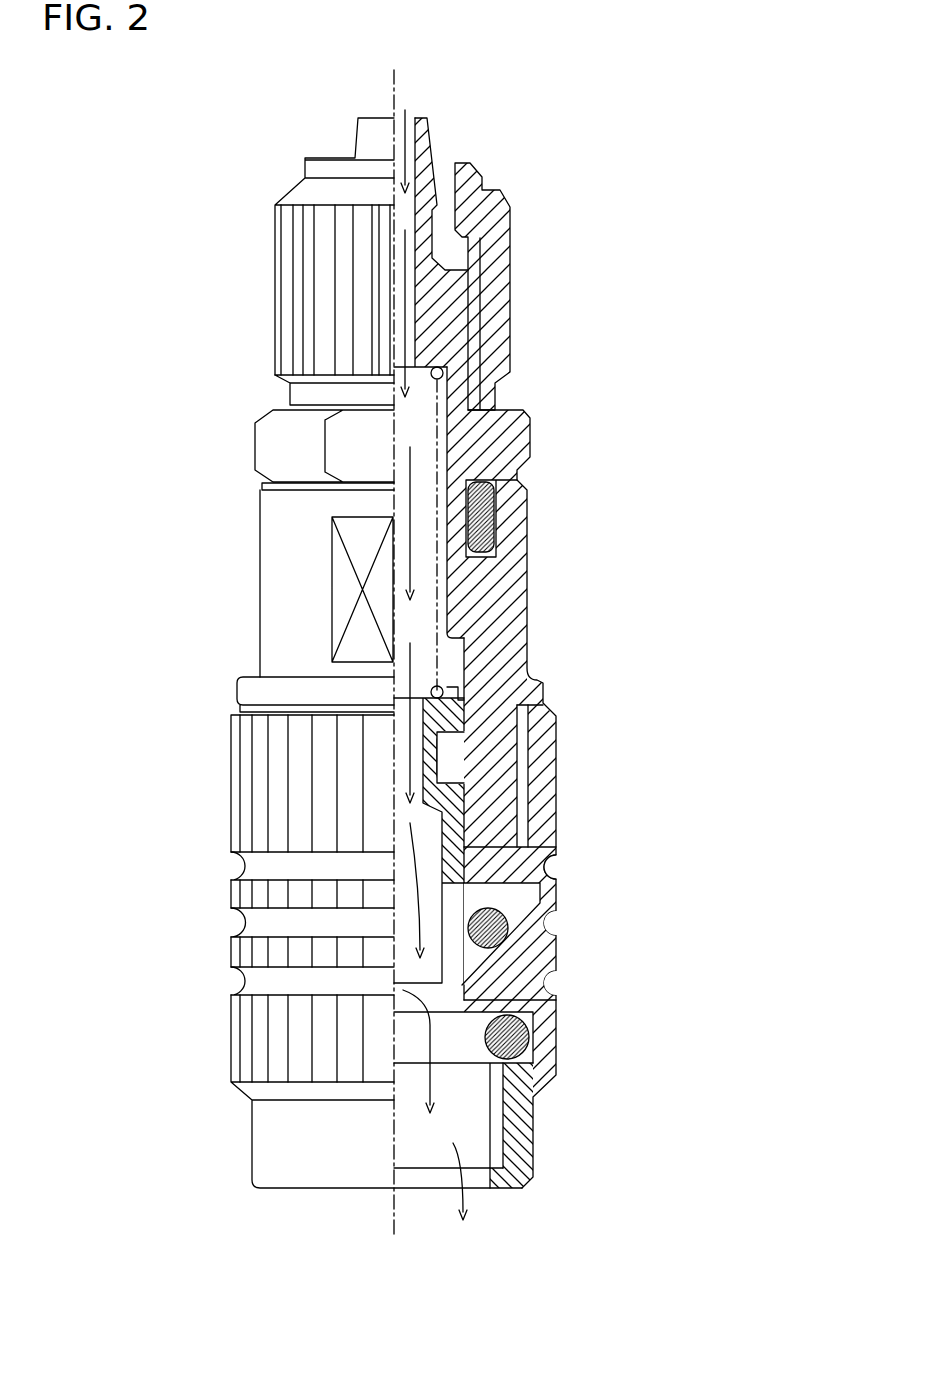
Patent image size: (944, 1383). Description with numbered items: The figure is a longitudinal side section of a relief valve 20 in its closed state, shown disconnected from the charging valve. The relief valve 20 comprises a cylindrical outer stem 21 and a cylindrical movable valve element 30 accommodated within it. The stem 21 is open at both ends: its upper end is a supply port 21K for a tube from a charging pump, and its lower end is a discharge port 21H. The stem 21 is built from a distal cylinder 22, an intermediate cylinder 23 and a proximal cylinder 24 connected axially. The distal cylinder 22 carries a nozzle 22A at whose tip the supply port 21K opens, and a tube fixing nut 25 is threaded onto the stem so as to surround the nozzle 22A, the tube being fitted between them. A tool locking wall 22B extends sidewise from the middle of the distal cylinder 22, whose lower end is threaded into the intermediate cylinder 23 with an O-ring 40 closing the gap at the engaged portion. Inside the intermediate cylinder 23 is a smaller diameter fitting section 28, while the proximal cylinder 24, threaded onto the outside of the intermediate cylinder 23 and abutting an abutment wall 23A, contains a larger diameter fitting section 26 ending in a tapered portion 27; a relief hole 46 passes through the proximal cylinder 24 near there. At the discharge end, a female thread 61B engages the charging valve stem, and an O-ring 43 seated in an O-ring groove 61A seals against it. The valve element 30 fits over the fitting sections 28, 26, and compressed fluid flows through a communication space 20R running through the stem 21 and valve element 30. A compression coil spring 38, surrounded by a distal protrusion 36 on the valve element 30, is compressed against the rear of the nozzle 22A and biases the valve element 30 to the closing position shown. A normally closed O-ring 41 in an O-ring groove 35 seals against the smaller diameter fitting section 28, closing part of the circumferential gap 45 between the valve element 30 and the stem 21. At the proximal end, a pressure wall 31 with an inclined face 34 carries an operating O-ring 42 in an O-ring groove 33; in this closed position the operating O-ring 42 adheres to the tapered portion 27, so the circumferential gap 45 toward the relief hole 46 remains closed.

The relief valve 20 is at (628, 132).
The stem 21 is at (620, 567).
The supply port 21K is at (396, 115).
The discharge port 21H is at (418, 1157).
The distal cylinder 22 is at (483, 578).
The nozzle 22A is at (432, 130).
The tool locking wall 22B is at (258, 444).
The intermediate cylinder 23 is at (507, 623).
The abutment wall 23A is at (245, 693).
The proximal cylinder 24 is at (548, 730).
The tube fixing nut 25 is at (505, 313).
The larger diameter fitting section 26 is at (550, 905).
The tapered portion 27 is at (500, 968).
The smaller diameter fitting section 28 is at (480, 758).
The movable valve element 30 is at (400, 995).
The pressure wall 31 is at (470, 900).
The O-ring groove 33 is at (462, 905).
The inclined face 34 is at (447, 933).
The O-ring groove 35 is at (430, 786).
The distal protrusion 36 is at (450, 687).
The compression coil spring 38 is at (431, 692).
The O-ring 40 is at (468, 518).
The normally closed O-ring 41 is at (437, 740).
The operating O-ring 42 is at (470, 922).
The O-ring 43 is at (530, 1036).
The circumferential gap 45 is at (525, 813).
The relief hole 46 is at (542, 868).
The O-ring groove 61A is at (530, 1068).
The female thread 61B is at (483, 1190).
The communication space 20R is at (392, 563).